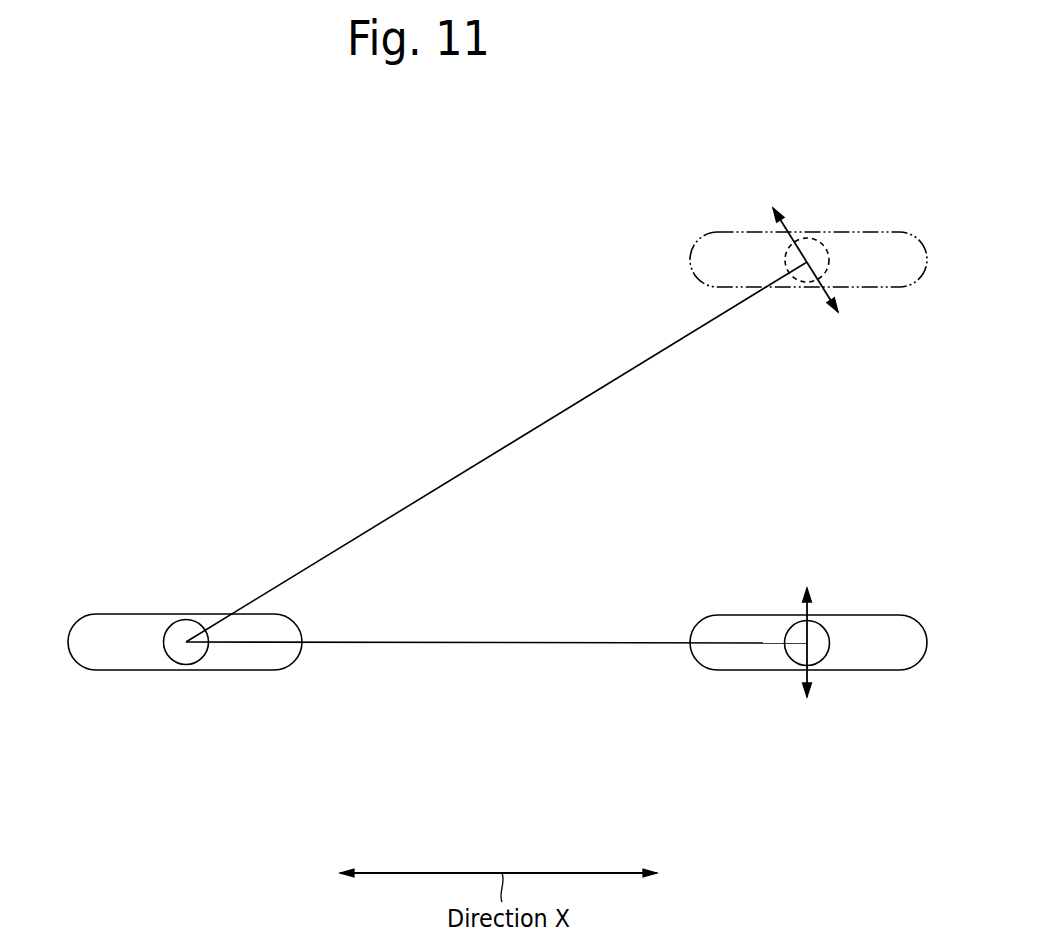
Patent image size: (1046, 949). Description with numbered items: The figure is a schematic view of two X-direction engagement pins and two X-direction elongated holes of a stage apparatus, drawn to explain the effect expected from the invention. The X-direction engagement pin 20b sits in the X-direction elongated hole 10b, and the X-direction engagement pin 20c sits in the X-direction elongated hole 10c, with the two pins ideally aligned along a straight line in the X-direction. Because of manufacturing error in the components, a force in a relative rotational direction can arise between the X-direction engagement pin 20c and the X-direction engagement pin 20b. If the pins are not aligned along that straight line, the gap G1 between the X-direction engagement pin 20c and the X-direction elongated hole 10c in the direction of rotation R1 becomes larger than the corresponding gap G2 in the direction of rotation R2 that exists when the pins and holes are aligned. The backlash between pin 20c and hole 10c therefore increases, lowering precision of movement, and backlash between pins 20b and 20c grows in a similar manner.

The X-direction elongated hole 10b is at (122, 614).
The X-direction engagement pin 20b is at (200, 657).
The X-direction elongated hole 10c is at (733, 232).
The X-direction engagement pin 20c is at (833, 263).
The gap G1 is at (787, 238).
The direction of rotation R1 is at (788, 223).
The gap G2 is at (803, 618).
The direction of rotation R2 is at (812, 610).